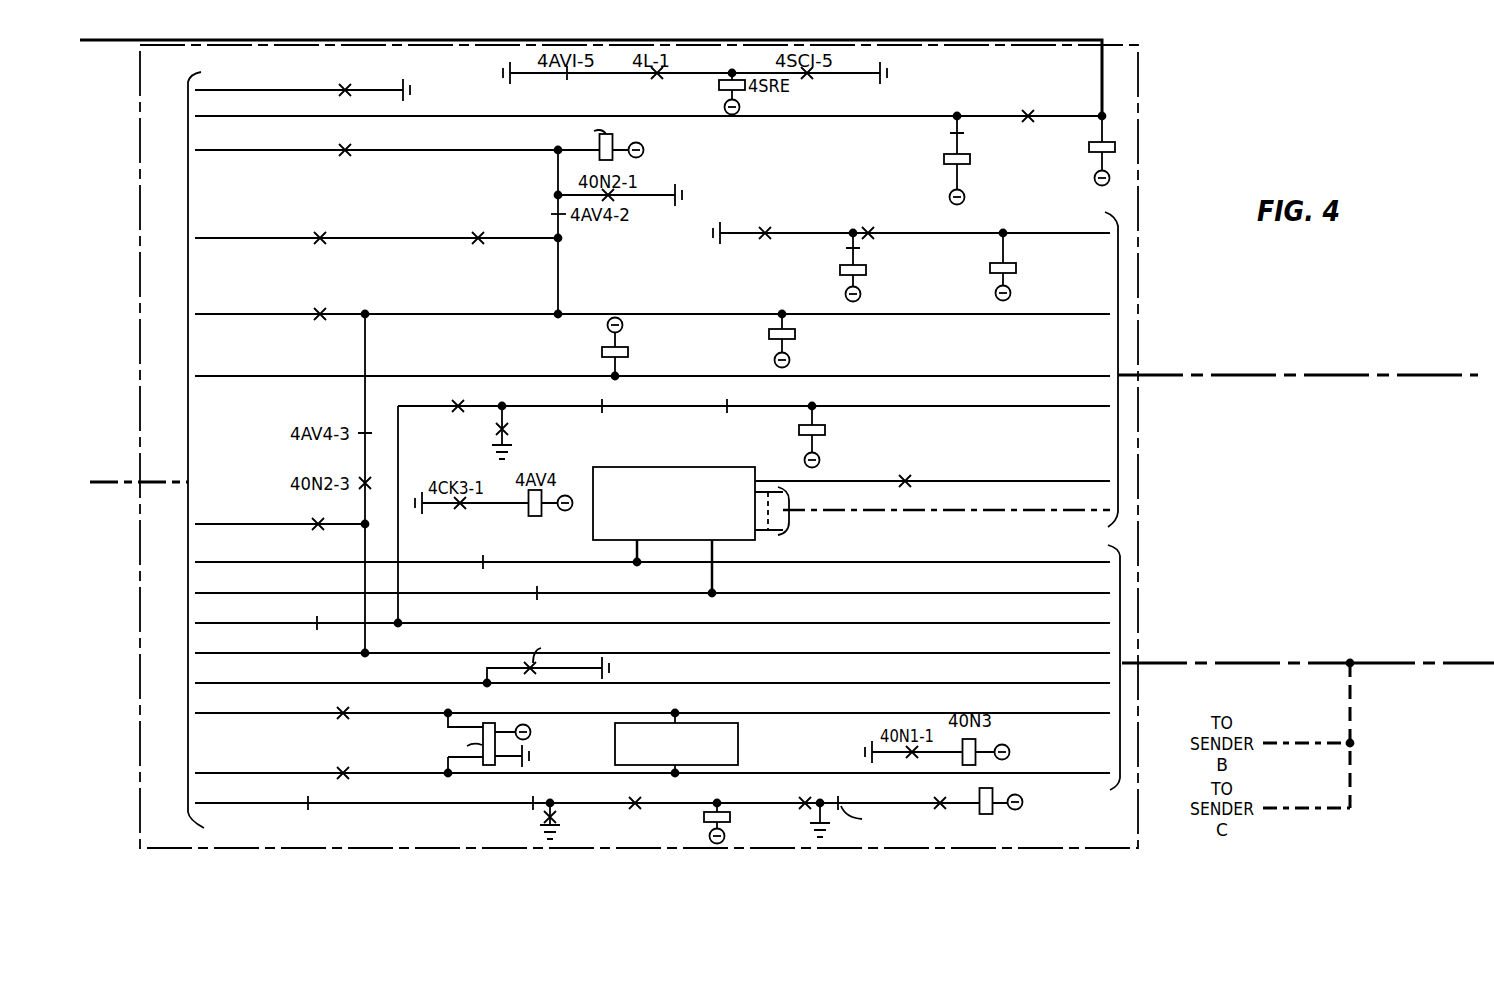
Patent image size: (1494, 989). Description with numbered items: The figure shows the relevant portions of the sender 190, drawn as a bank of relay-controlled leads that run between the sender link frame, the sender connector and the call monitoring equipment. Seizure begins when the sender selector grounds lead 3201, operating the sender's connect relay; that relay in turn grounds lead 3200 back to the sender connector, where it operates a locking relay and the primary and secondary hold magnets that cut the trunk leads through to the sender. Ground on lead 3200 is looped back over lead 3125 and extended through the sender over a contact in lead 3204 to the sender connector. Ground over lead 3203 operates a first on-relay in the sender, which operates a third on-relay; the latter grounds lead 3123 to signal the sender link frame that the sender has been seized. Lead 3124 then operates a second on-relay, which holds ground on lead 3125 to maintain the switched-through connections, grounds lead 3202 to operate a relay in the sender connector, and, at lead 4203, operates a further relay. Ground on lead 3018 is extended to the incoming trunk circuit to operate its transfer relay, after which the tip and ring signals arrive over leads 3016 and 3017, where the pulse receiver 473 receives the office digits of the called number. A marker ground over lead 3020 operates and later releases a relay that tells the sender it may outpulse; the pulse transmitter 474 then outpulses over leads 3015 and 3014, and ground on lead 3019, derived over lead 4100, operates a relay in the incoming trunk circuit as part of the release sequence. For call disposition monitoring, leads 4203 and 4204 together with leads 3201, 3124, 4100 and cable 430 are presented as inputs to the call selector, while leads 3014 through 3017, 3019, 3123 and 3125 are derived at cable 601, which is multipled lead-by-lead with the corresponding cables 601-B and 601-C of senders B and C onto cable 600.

The sender 190 is at (135, 152).
The lead 3200 is at (302, 83).
The lead 3020 is at (655, 129).
The lead 3203 is at (419, 140).
The lead 3202 is at (376, 225).
The lead 4203 is at (911, 255).
The lead 3124 is at (652, 325).
The lead 3201 is at (652, 349).
The lead 4100 is at (754, 502).
The pulse transmitter 474 is at (712, 467).
The lead 4204 is at (932, 470).
The cable 430 is at (932, 510).
The lead 3204 is at (280, 514).
The lead 3014 is at (652, 552).
The lead 3015 is at (652, 583).
The lead 3019 is at (652, 613).
The lead 3125 is at (652, 640).
The lead 3123 is at (652, 657).
The lead 3016 is at (652, 729).
The pulse receiver 473 is at (746, 741).
The lead 3017 is at (652, 763).
The lead 3018 is at (609, 809).
The cable 601 is at (1205, 662).
The cable 600 is at (1425, 661).
The cable 601-B is at (1308, 733).
The cable 601-C is at (1306, 796).